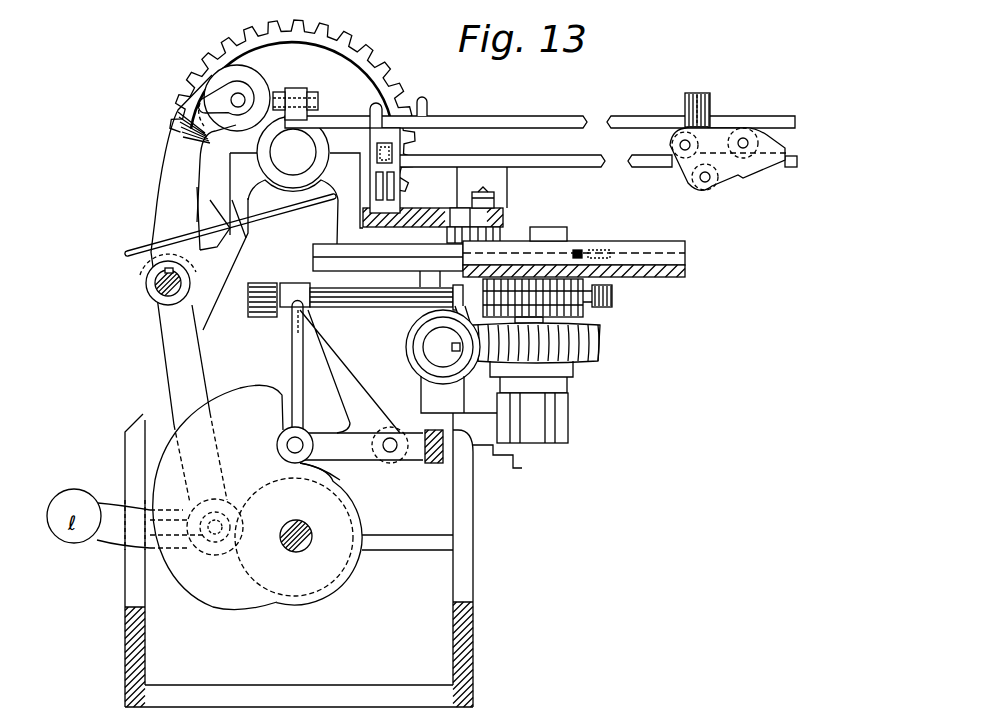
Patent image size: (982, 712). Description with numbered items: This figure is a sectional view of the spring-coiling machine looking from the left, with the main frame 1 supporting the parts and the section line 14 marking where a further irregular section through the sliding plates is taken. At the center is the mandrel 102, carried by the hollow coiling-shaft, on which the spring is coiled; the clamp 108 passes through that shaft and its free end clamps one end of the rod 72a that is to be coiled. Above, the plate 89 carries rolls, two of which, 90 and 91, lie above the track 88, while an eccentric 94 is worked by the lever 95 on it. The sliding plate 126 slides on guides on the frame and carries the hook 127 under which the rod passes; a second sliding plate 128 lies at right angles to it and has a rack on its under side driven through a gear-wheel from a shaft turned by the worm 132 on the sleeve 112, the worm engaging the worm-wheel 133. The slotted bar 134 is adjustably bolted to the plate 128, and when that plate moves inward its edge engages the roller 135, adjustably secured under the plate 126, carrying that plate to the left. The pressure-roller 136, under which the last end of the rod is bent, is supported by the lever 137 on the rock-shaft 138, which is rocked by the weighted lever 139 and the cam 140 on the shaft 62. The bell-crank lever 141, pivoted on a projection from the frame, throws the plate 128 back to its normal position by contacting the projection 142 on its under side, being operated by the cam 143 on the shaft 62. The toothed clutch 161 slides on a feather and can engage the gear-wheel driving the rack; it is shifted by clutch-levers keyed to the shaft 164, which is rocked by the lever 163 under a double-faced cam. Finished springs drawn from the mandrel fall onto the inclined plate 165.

The main frame 1 is at (323, 430).
The section line 14 is at (672, 238).
The shaft 62 is at (312, 541).
The rod 72a is at (530, 117).
The track 88 is at (542, 167).
The plate 89 is at (728, 159).
The roll 90 is at (751, 134).
The roll 91 is at (676, 140).
The eccentric 94 is at (712, 112).
The lever 95 is at (692, 99).
The mandrel 102 is at (293, 152).
The clamp 108 is at (303, 93).
The sleeve 112 is at (443, 347).
The sliding plate 126 is at (411, 207).
The hook 127 is at (400, 146).
The sliding plate 128 is at (617, 273).
The worm 132 is at (450, 363).
The worm-wheel 133 is at (567, 378).
The bar 134 is at (574, 246).
The roller 135 is at (507, 227).
The pressure-roller 136 is at (247, 77).
The lever 137 is at (198, 250).
The rock-shaft 138 is at (156, 288).
The lever 139 is at (200, 404).
The cam 140 is at (338, 477).
The bell-crank lever 141 is at (350, 371).
The projection 142 is at (471, 307).
The cam 143 is at (216, 497).
The toothed clutch 161 is at (583, 313).
The lever 163 is at (297, 378).
The shaft 164 is at (350, 307).
The inclined plate 165 is at (262, 215).